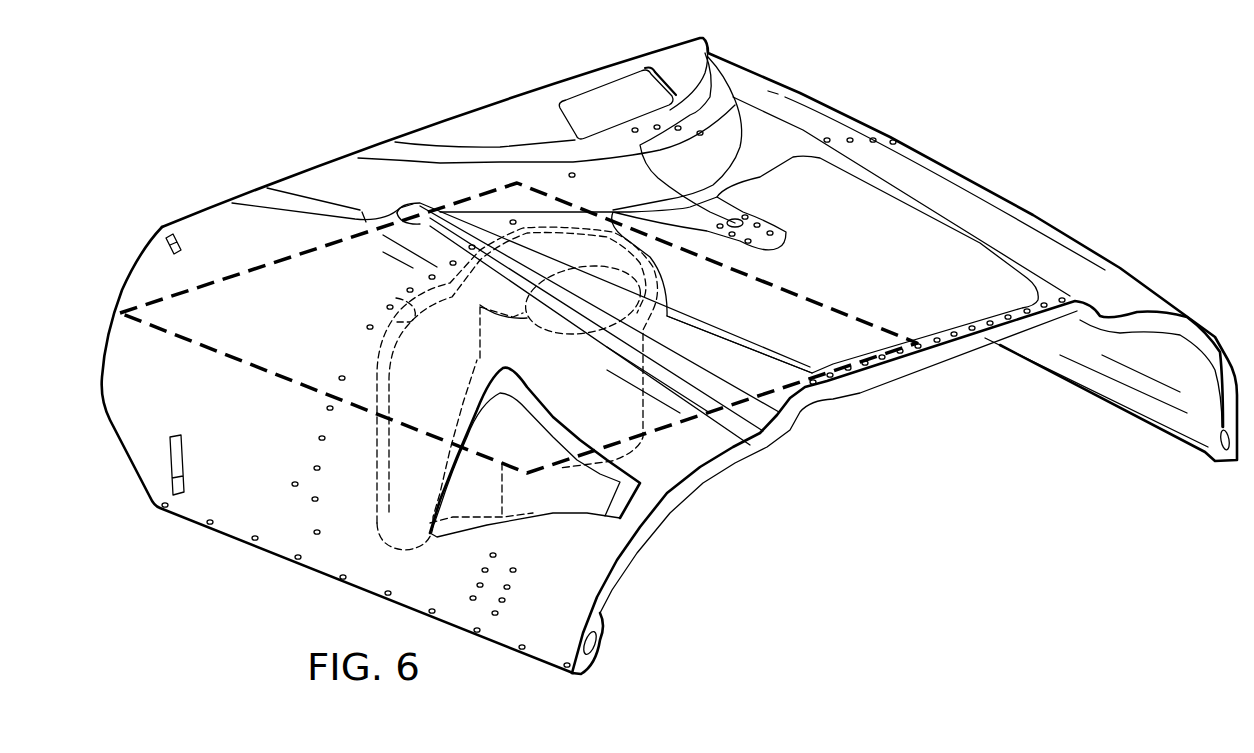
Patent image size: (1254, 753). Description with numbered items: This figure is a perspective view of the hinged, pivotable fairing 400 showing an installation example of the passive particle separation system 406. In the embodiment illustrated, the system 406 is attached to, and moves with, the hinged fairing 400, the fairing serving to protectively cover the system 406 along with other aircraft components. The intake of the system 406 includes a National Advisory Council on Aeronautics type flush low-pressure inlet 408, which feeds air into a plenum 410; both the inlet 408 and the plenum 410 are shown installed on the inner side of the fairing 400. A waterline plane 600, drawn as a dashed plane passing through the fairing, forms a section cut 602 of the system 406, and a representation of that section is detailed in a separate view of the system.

The pivotable fairing 400 is at (213, 223).
The waterline plane 600 is at (813, 297).
The section cut 602 is at (592, 212).
The plenum 410 is at (396, 298).
The passive particle separation system 406 is at (360, 350).
The NACA type flush low-pressure inlet 408 is at (555, 500).